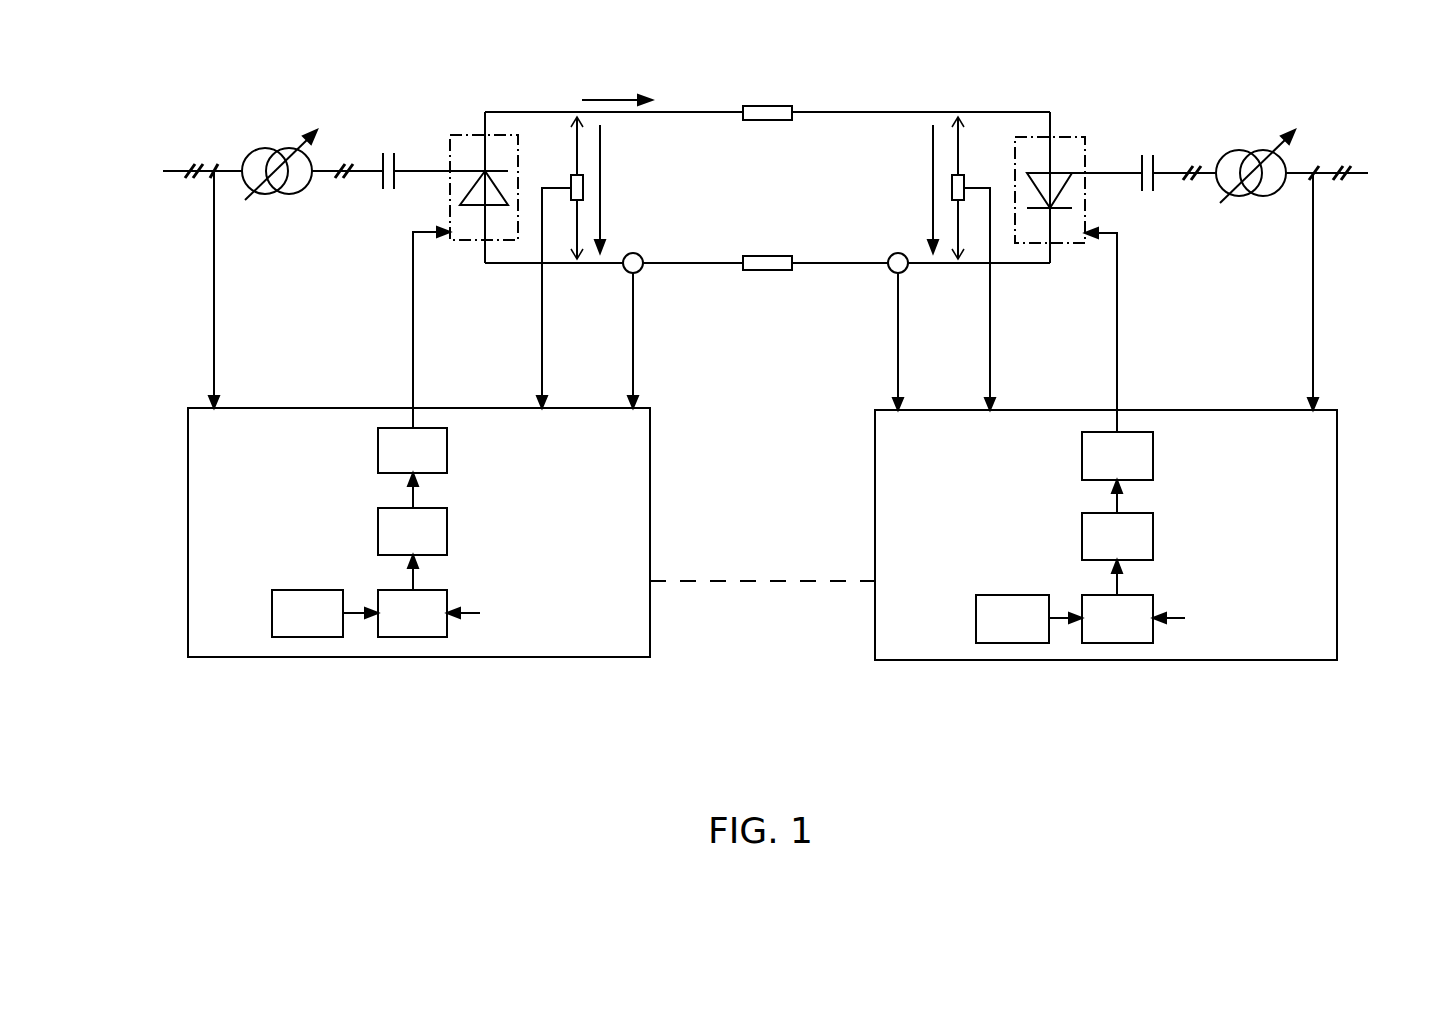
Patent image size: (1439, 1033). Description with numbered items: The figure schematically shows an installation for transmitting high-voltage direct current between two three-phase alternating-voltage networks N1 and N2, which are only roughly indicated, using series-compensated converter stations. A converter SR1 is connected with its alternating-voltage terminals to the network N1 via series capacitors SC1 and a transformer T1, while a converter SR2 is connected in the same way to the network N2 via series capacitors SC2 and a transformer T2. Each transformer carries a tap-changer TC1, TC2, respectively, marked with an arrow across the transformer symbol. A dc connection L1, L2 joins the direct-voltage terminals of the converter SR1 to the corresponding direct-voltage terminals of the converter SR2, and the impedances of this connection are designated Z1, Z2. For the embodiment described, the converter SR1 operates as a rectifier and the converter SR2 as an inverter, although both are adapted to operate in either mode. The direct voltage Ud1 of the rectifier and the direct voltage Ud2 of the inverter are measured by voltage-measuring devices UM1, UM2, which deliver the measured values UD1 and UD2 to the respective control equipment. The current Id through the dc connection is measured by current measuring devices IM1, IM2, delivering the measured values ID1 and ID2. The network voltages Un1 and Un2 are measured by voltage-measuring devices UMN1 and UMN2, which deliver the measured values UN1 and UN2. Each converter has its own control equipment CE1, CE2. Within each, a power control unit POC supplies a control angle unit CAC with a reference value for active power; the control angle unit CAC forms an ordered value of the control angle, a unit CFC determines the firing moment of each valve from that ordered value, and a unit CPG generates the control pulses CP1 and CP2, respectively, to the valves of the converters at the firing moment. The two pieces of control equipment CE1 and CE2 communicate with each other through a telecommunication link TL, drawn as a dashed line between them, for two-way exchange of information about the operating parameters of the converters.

The alternating-voltage network N1 is at (168, 174).
The voltage of alternating-voltage network N1 Un1 is at (158, 153).
The voltage-measuring device UMN1 is at (216, 171).
The measured value of network voltage UN1 is at (192, 289).
The transformer T1 is at (264, 148).
The tap-changer TC1 is at (298, 127).
The series capacitors SC1 is at (382, 152).
The converter SR1 is at (447, 143).
The dc connection L1 is at (671, 112).
The dc connection L2 is at (671, 263).
The impedance of dc connection Z1 is at (768, 106).
The impedance of dc connection Z2 is at (768, 256).
The current through dc connection Id is at (617, 89).
The direct voltage of rectifier Ud1 is at (622, 189).
The direct voltage of inverter Ud2 is at (913, 189).
The voltage-measuring device UM1 is at (571, 188).
The measured value of direct voltage UD1 is at (529, 298).
The voltage-measuring device UM2 is at (964, 186).
The measured value of direct voltage UD2 is at (1003, 299).
The current measuring device IM1 is at (643, 271).
The measured value of direct current ID1 is at (615, 340).
The current measuring device IM2 is at (890, 271).
The measured value of direct current ID2 is at (917, 341).
The converter SR2 is at (1087, 150).
The series capacitors SC2 is at (1153, 157).
The transformer T2 is at (1232, 150).
The tap-changer TC2 is at (1268, 137).
The voltage-measuring device UMN2 is at (1313, 172).
The measured value of network voltage UN2 is at (1337, 291).
The alternating-voltage network N2 is at (1360, 176).
The voltage of alternating-voltage network N2 Un2 is at (1379, 158).
The control pulses CP1 is at (436, 327).
The control pulses CP2 is at (1094, 330).
The control equipment CE1 is at (618, 458).
The control equipment CE2 is at (959, 459).
The control pulse generating unit CPG is at (765, 454).
The firing moment determining unit CFC is at (765, 534).
The control angle unit CAC is at (765, 616).
The power control unit POC is at (660, 616).
The telecommunication link TL is at (747, 581).